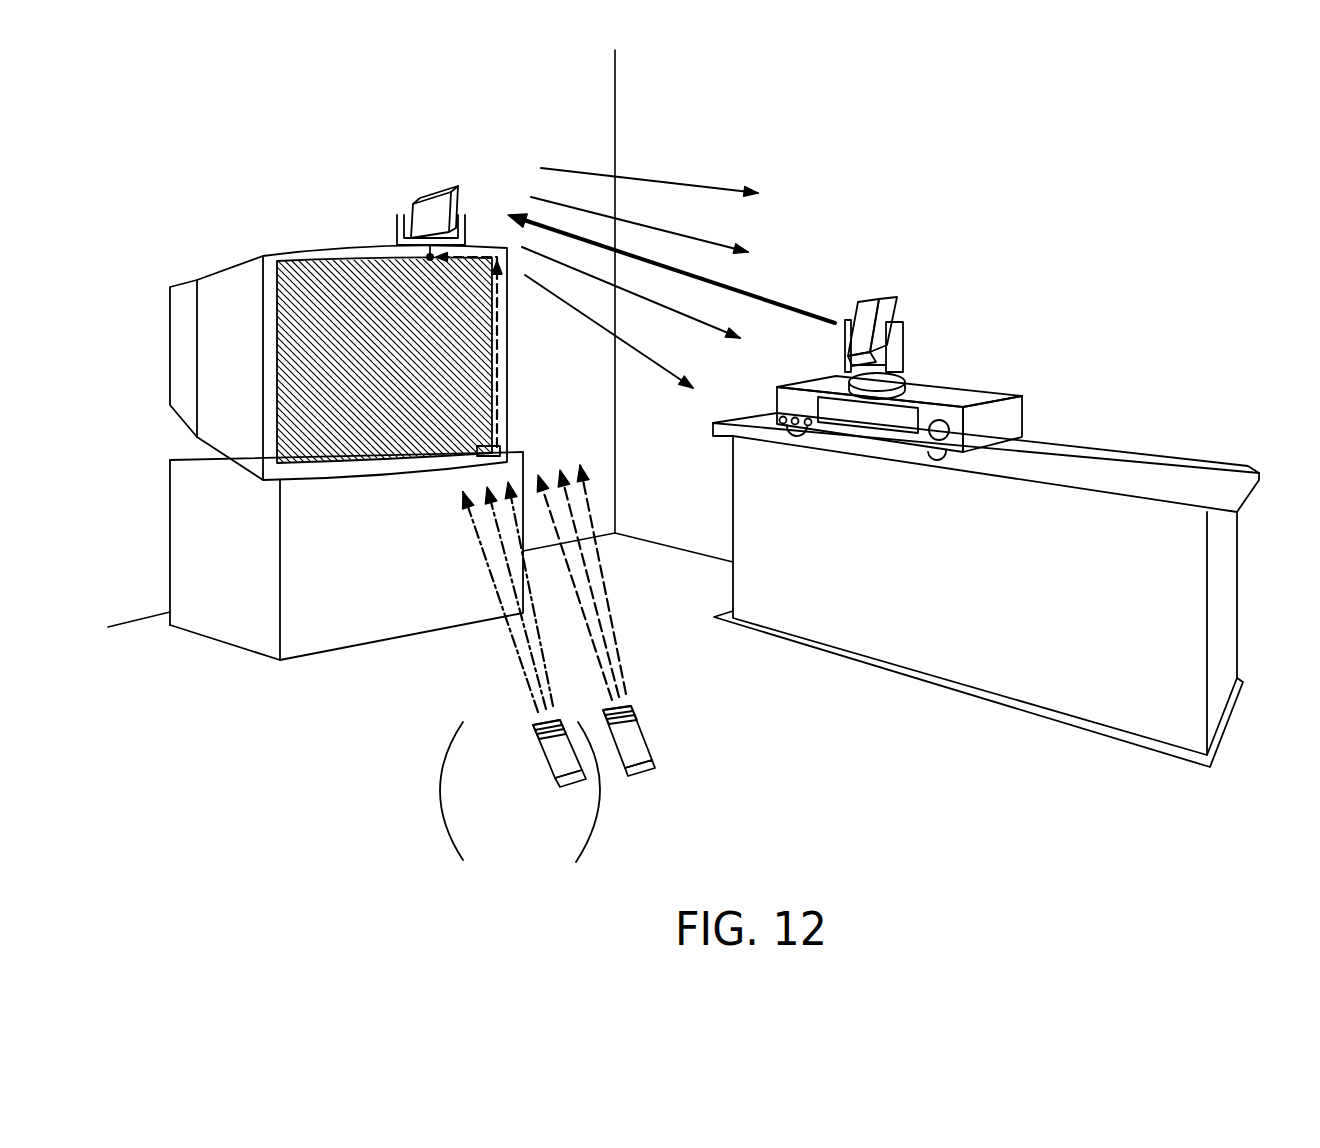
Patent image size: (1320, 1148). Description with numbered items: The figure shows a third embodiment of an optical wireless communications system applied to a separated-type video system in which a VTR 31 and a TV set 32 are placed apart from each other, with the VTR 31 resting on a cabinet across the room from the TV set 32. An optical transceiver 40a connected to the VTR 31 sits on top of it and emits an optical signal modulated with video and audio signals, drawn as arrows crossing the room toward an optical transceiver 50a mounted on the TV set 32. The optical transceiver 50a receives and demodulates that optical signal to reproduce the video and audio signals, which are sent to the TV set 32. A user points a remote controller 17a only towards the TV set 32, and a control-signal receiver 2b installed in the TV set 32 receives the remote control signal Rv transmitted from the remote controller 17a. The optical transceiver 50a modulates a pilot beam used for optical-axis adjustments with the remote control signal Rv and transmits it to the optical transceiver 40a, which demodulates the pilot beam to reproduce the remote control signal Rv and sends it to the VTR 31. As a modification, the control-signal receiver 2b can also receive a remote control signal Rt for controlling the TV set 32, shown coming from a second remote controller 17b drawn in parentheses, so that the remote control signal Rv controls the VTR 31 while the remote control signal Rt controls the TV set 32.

The TV set 32 is at (192, 285).
The optical transceiver 50a is at (418, 197).
The control-signal receiver 2b is at (508, 445).
The optical transceiver 40a is at (893, 300).
The VTR 31 is at (1002, 396).
The remote controller 17a is at (648, 740).
The remote controller 17b is at (545, 762).
The remote control signal Rt is at (526, 675).
The remote control signal Rv is at (612, 632).